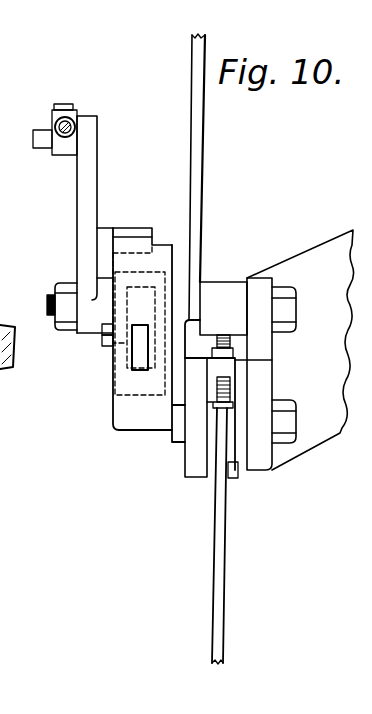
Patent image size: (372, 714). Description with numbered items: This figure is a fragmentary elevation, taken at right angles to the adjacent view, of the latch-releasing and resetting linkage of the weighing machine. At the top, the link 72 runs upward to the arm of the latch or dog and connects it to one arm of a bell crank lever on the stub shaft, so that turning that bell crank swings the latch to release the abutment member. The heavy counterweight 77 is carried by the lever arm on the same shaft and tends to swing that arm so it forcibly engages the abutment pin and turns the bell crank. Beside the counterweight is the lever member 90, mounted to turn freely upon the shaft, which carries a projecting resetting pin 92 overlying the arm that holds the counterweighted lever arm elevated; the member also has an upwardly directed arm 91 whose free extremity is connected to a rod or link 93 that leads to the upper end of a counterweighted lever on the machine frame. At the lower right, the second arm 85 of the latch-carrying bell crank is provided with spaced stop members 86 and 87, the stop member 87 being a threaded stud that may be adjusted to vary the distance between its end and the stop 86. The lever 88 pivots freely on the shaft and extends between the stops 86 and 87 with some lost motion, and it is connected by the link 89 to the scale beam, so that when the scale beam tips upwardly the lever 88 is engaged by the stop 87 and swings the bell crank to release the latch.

The link 72 is at (203, 170).
The counterweight 77 is at (138, 420).
The second arm 85 is at (195, 462).
The stop member 86 is at (208, 478).
The stop member 87 is at (228, 385).
The lever 88 is at (208, 422).
The link 89 is at (223, 532).
The lever member 90 is at (102, 233).
The upwardly directed arm 91 is at (87, 206).
The resetting pin 92 is at (140, 235).
The rod or link 93 is at (57, 118).